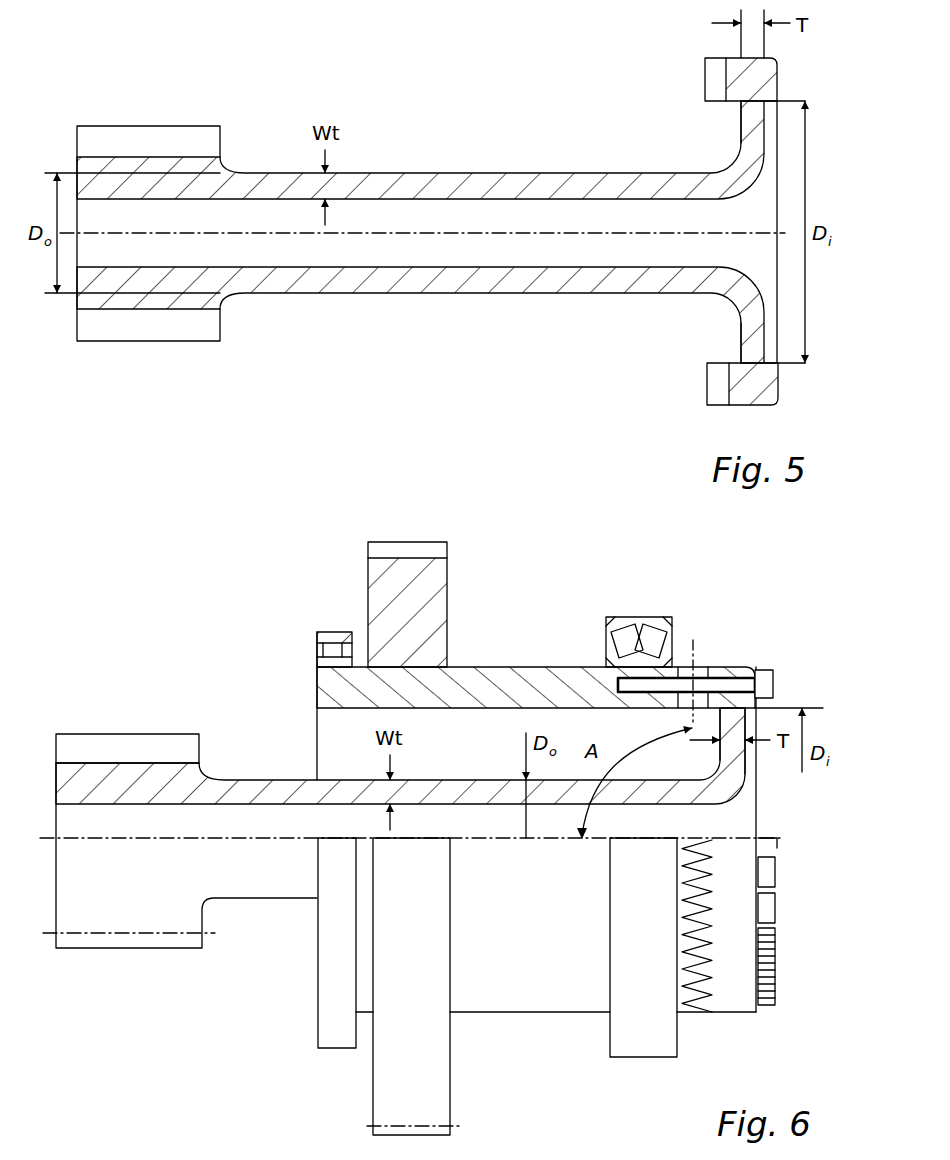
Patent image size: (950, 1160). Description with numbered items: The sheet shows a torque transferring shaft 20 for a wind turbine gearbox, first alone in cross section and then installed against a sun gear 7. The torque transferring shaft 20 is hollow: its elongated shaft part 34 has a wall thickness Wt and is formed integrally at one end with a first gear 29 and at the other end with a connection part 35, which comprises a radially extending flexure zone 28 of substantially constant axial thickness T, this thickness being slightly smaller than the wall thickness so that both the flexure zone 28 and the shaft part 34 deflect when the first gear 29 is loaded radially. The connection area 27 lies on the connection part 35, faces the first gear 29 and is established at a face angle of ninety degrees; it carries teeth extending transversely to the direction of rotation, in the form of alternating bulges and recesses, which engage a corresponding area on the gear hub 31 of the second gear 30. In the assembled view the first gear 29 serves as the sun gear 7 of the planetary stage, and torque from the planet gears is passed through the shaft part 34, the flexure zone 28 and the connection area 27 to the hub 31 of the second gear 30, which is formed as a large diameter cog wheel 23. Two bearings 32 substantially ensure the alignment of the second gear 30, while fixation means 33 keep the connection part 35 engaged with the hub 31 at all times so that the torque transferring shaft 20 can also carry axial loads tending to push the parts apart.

In FIG. 6, the sun gear 7 is at (158, 747).
In FIG. 5, the torque transferring shaft 20 is at (420, 251).
In FIG. 6, the torque transferring shaft 20 is at (263, 790).
In FIG. 6, the large diameter cog wheel 23 is at (428, 592).
In FIG. 5, the connection area 27 is at (710, 78).
In FIG. 6, the connection area 27 is at (702, 668).
In FIG. 5, the flexure zone 28 is at (694, 232).
In FIG. 6, the flexure zone 28 is at (781, 839).
In FIG. 5, the first gear 29 is at (138, 133).
In FIG. 6, the first gear 29 is at (122, 748).
In FIG. 6, the second gear 30 is at (410, 575).
In FIG. 6, the gear hub 31 is at (598, 677).
In FIG. 6, the bearings 32 is at (343, 637).
In FIG. 6, the fixation means 33 is at (773, 682).
In FIG. 5, the shaft part 34 is at (520, 183).
In FIG. 6, the shaft part 34 is at (290, 882).
In FIG. 5, the connection part 35 is at (747, 140).
In FIG. 6, the connection part 35 is at (733, 750).